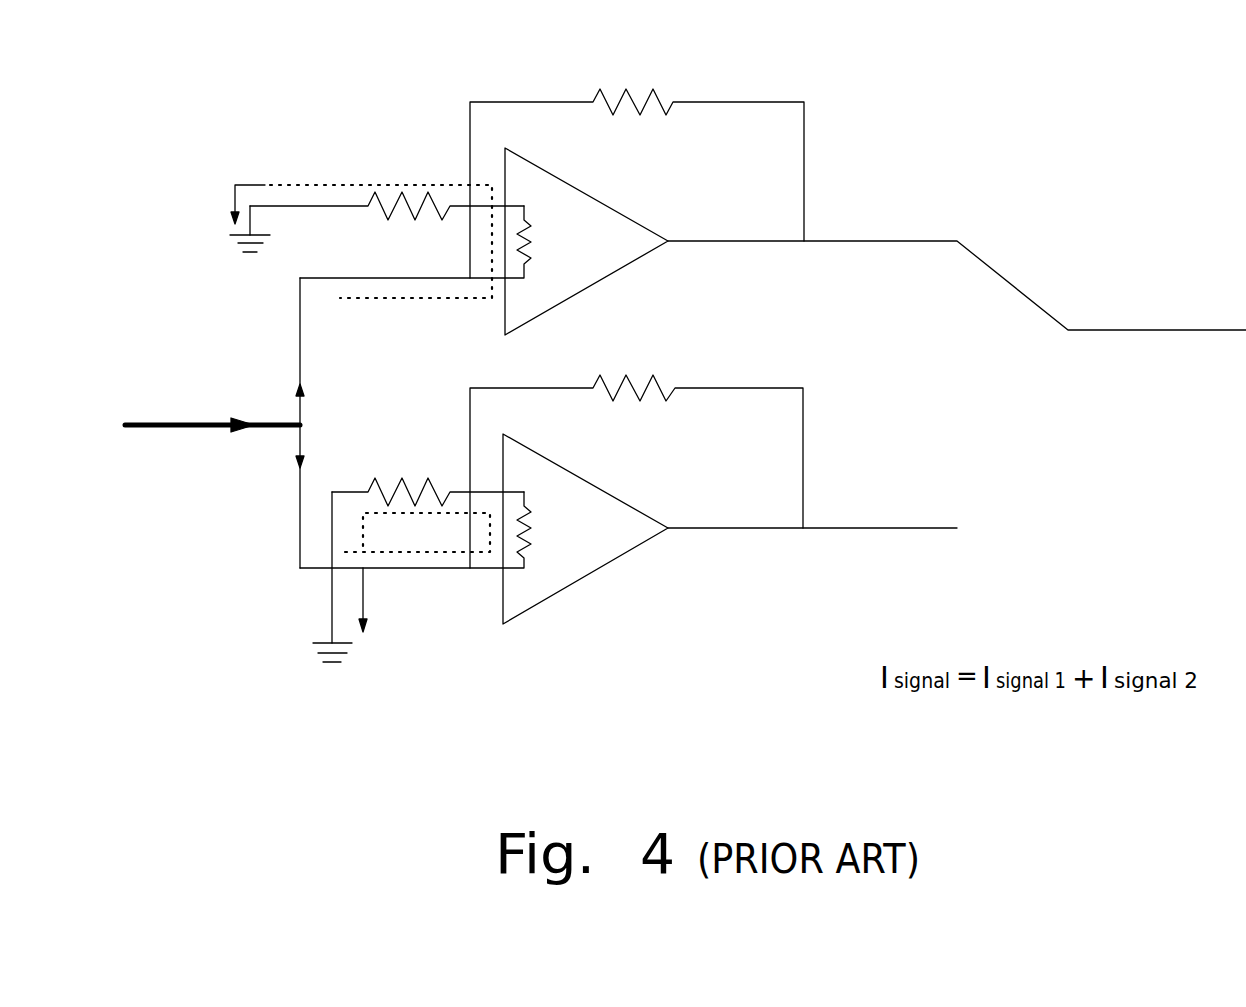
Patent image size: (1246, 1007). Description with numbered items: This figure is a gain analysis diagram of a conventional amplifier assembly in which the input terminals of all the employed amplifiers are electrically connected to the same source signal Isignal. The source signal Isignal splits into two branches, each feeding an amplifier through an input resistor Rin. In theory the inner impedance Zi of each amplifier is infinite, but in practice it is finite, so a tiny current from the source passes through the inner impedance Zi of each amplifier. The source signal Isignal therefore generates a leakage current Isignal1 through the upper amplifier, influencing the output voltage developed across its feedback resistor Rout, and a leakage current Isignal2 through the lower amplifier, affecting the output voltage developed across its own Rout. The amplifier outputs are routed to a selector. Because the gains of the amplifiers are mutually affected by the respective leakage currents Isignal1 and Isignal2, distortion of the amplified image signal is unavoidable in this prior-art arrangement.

The output resistor Rout is at (637, 298).
The input resistor Rin is at (387, 326).
The inner impedance Zi is at (433, 387).
The source signal Isignal is at (212, 405).
The leakage current Isignal 1 Isignal1 is at (361, 222).
The leakage current Isignal 2 Isignal2 is at (401, 577).
The element selector is at (957, 384).